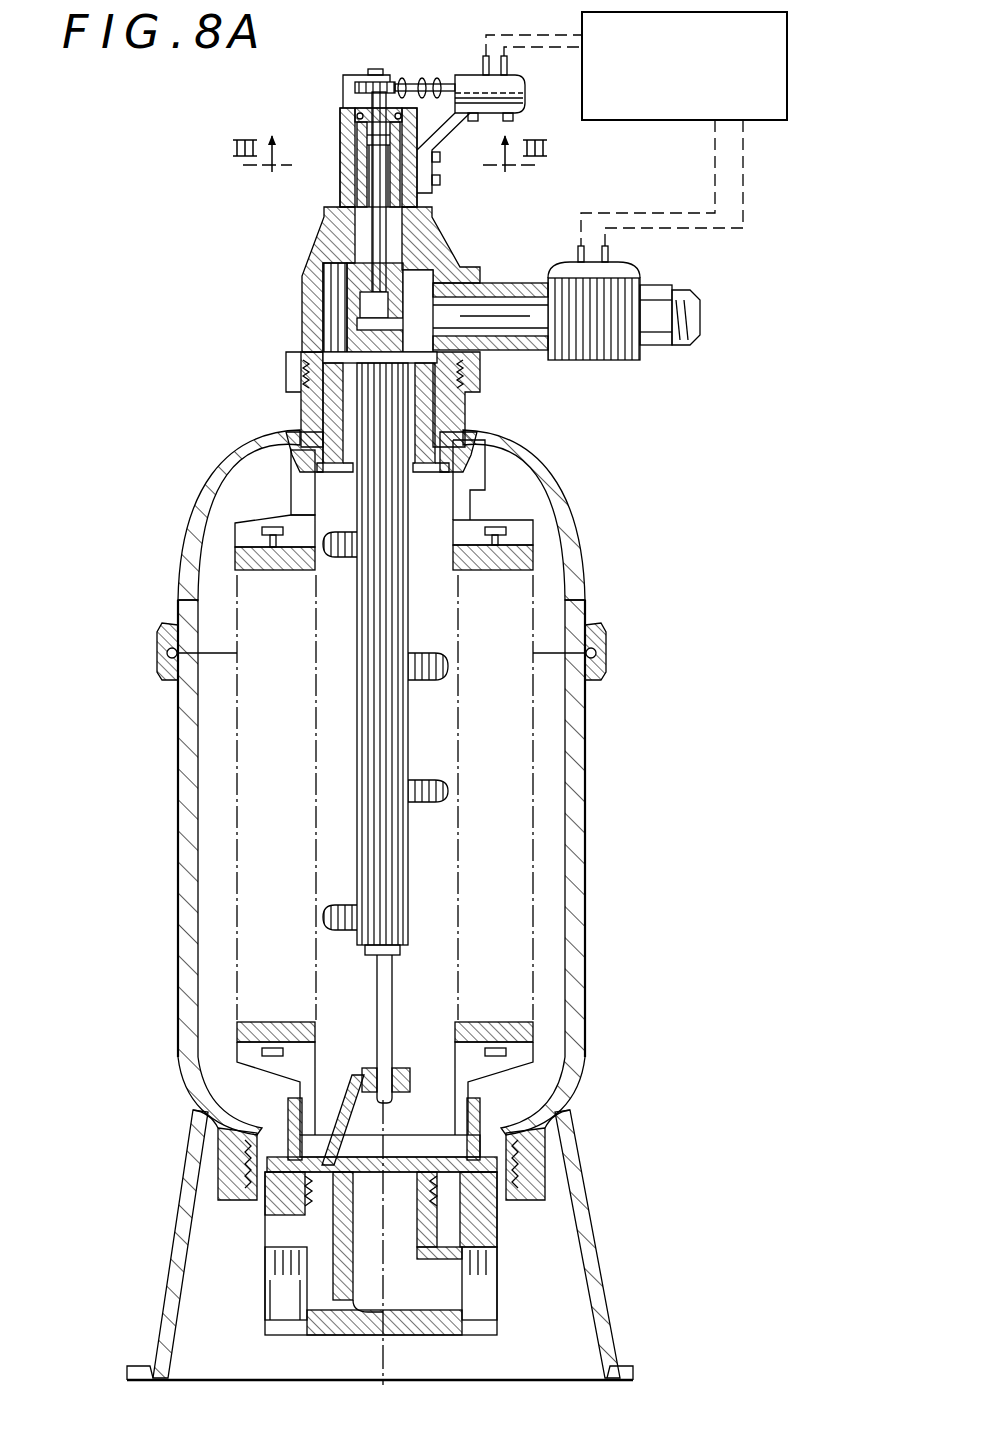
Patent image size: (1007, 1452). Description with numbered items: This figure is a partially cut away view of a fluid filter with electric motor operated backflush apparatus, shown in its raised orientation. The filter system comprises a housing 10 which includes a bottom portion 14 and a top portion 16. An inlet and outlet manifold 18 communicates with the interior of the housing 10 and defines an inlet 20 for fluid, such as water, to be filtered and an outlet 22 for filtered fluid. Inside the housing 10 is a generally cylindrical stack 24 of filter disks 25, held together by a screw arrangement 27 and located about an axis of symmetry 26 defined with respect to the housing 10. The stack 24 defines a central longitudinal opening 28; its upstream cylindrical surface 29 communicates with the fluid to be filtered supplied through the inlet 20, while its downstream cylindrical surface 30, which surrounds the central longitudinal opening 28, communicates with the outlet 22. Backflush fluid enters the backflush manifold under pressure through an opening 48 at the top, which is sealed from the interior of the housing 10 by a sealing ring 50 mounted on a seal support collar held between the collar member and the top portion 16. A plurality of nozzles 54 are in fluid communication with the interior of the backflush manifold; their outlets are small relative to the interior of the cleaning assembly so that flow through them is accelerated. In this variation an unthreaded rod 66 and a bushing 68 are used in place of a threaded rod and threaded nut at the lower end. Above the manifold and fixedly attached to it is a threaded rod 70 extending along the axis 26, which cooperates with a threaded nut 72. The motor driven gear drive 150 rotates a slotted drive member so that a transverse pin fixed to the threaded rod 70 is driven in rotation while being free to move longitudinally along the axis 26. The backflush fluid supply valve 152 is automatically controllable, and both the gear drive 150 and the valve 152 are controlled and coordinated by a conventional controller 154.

The housing 10 is at (600, 718).
The bottom portion 14 is at (590, 970).
The top portion 16 is at (535, 462).
The inlet and outlet manifold 18 is at (264, 1272).
The inlet 20 is at (272, 1290).
The outlet 22 is at (493, 1272).
The stack 24 is at (545, 771).
The filter disks 25 is at (237, 1028).
The axis of symmetry 26 is at (385, 1336).
The screw arrangement 27 is at (500, 527).
The central longitudinal opening 28 is at (428, 975).
The upstream cylindrical surface 29 is at (533, 857).
The downstream cylindrical surface 30 is at (310, 940).
The opening 48 is at (368, 312).
The sealing ring 50 is at (304, 445).
The nozzles 54 is at (450, 670).
The unthreaded rod 66 is at (393, 1045).
The bushing 68 is at (360, 1075).
The threaded rod 70 is at (353, 185).
The threaded nut 72 is at (428, 246).
The motor driven gear drive 150 is at (414, 76).
The valve 152 is at (568, 278).
The controller 154 is at (788, 44).